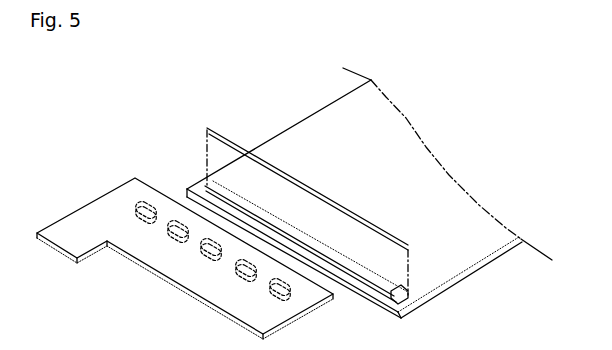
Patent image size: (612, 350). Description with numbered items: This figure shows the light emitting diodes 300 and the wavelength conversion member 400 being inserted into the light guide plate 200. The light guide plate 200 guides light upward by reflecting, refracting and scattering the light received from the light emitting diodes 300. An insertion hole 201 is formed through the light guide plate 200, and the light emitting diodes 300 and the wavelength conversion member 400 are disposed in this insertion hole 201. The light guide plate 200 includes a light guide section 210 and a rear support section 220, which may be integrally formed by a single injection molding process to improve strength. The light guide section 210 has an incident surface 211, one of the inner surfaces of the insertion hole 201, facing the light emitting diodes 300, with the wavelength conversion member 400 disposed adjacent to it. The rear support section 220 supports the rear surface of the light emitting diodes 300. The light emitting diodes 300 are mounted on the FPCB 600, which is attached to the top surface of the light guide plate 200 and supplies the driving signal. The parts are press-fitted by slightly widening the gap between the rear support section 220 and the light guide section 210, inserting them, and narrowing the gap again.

The light guide plate 200 is at (299, 90).
The insertion hole 201 is at (396, 306).
The light guide section 210 is at (466, 266).
The incident surface 211 is at (327, 248).
The rear support section 220 is at (366, 286).
The light emitting diodes 300 is at (137, 199).
The wavelength conversion member 400 is at (207, 127).
The FPCB 600 is at (60, 220).